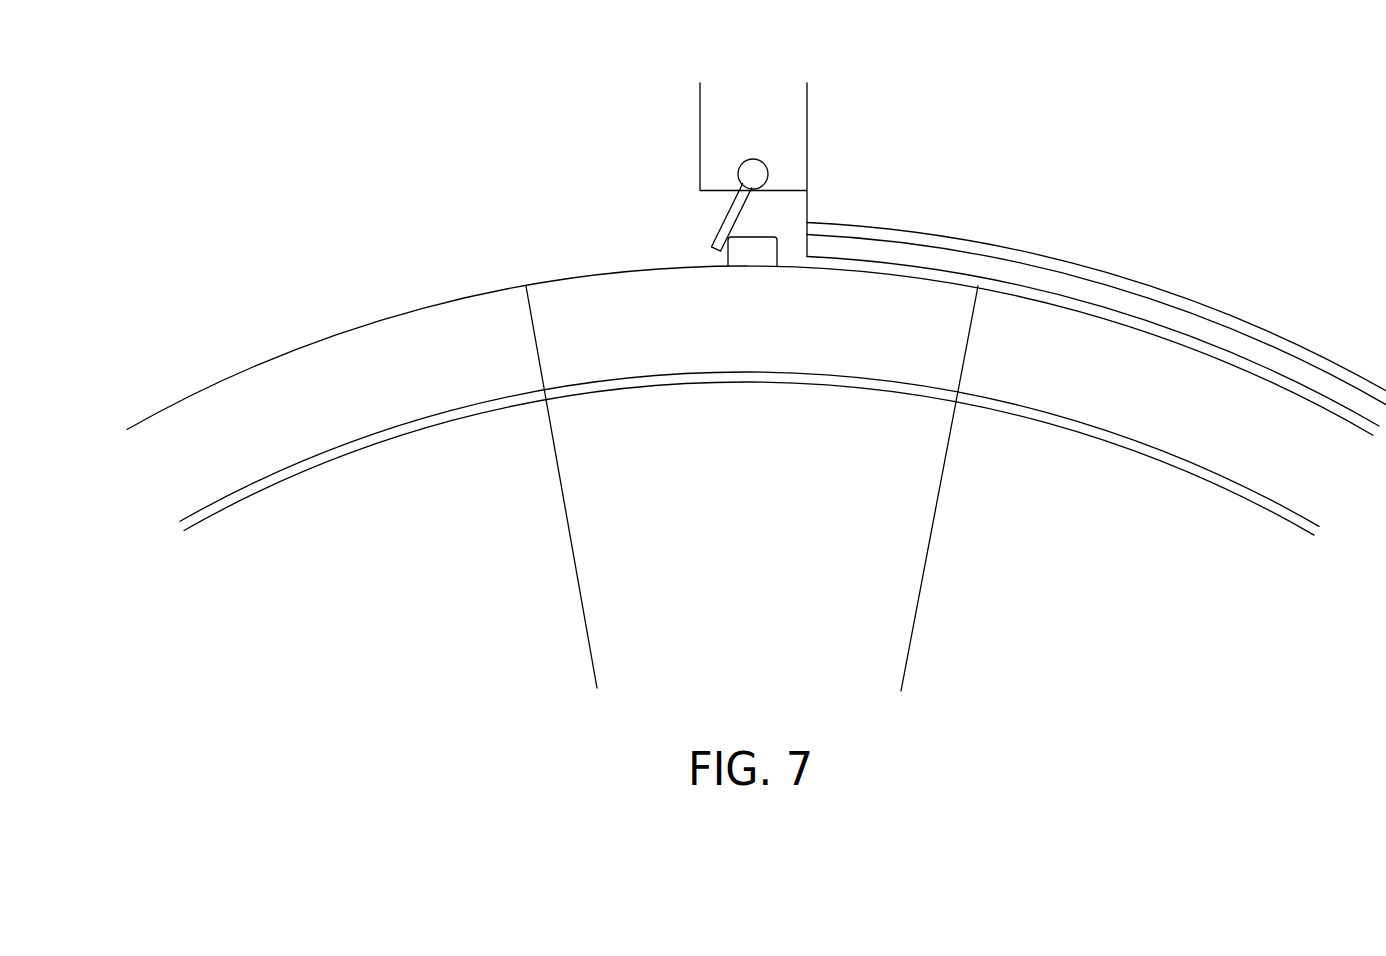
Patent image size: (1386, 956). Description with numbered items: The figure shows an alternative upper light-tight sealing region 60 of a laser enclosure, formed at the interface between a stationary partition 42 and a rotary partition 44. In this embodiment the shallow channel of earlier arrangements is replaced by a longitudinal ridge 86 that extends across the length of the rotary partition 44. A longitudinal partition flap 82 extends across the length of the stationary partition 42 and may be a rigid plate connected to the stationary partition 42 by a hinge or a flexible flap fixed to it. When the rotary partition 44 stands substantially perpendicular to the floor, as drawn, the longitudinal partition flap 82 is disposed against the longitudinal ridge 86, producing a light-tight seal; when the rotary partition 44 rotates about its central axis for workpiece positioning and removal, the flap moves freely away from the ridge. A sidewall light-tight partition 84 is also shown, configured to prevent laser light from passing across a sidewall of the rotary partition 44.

The light-tight sealing region 60 is at (492, 124).
The stationary partition 42 is at (797, 149).
The rotary partition 44 is at (917, 561).
The longitudinal partition flap 82 is at (712, 238).
The sidewall light-tight partition 84 is at (1020, 267).
The longitudinal ridge 86 is at (765, 261).